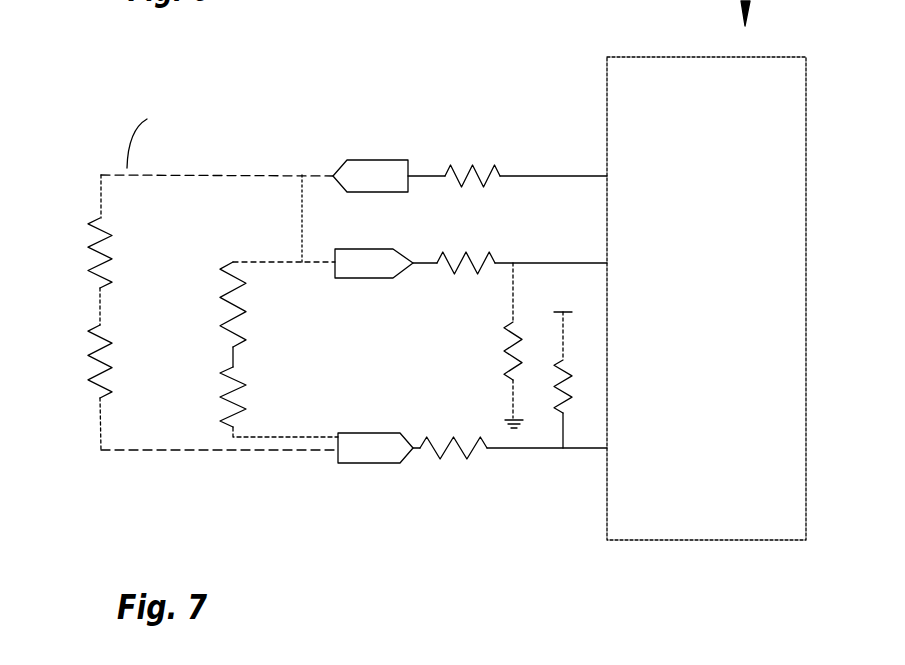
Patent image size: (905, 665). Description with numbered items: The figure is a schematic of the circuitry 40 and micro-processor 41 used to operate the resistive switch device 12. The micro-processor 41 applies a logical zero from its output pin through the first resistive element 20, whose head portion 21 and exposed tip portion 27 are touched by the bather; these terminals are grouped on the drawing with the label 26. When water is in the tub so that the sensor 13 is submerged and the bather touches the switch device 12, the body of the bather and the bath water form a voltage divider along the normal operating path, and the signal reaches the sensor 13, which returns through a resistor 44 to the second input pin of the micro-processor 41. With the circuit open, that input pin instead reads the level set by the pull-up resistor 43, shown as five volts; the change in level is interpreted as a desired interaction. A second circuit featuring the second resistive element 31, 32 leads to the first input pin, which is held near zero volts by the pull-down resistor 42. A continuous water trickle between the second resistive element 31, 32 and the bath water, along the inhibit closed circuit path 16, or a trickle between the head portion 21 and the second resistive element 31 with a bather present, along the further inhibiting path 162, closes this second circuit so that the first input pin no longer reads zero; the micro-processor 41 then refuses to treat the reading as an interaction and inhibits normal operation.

The resistive switch device 12 is at (313, 90).
The sensor 13 is at (373, 463).
The connection line 16 is at (259, 260).
The connection line 162 is at (303, 213).
The first resistive element 20 is at (480, 182).
The head portion 21 is at (391, 132).
The exposed tip portion 27 is at (391, 132).
The driver buffer 26 is at (363, 160).
The second resistive element 31 is at (362, 278).
The second resistive element 32 is at (452, 268).
The circuitry 40 is at (497, 118).
The micro-processor 41 is at (706, 298).
The pull-down resistor 42 is at (505, 358).
The pull-up resistor 43 is at (565, 357).
The input resistor 44 is at (455, 435).